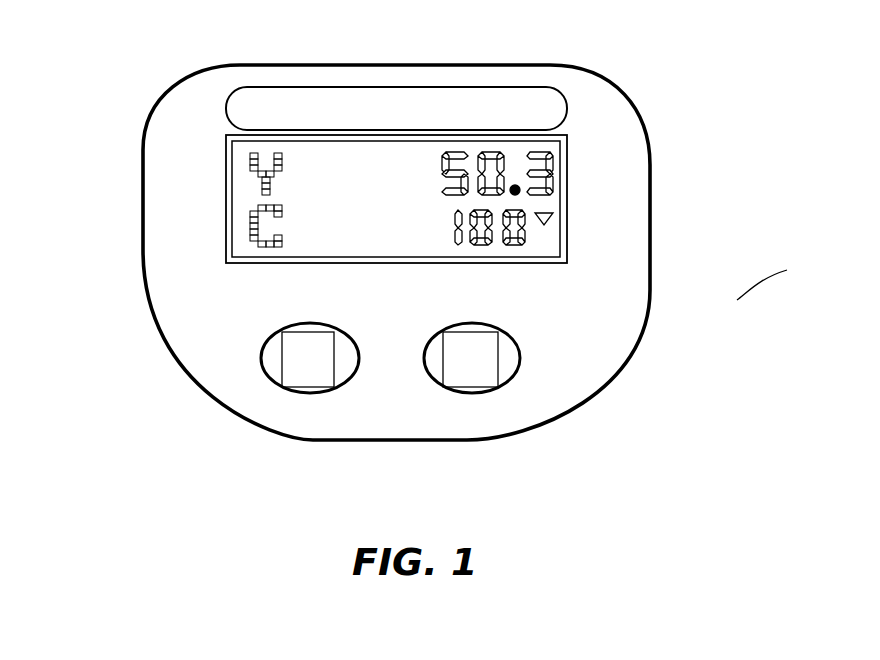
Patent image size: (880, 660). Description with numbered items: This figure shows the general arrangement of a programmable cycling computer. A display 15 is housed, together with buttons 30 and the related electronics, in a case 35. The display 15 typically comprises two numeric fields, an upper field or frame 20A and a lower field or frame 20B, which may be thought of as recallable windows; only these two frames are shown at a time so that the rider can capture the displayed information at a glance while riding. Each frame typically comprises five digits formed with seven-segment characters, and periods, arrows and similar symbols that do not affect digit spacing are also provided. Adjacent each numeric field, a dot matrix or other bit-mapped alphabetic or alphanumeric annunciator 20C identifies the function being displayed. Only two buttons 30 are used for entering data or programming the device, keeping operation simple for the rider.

The display 15 is at (342, 76).
The case 35 is at (567, 155).
The upper field or frame 20A is at (553, 182).
The lower field or frame 20B is at (528, 232).
The annunciator 20C is at (250, 222).
The buttons 30 is at (305, 370).